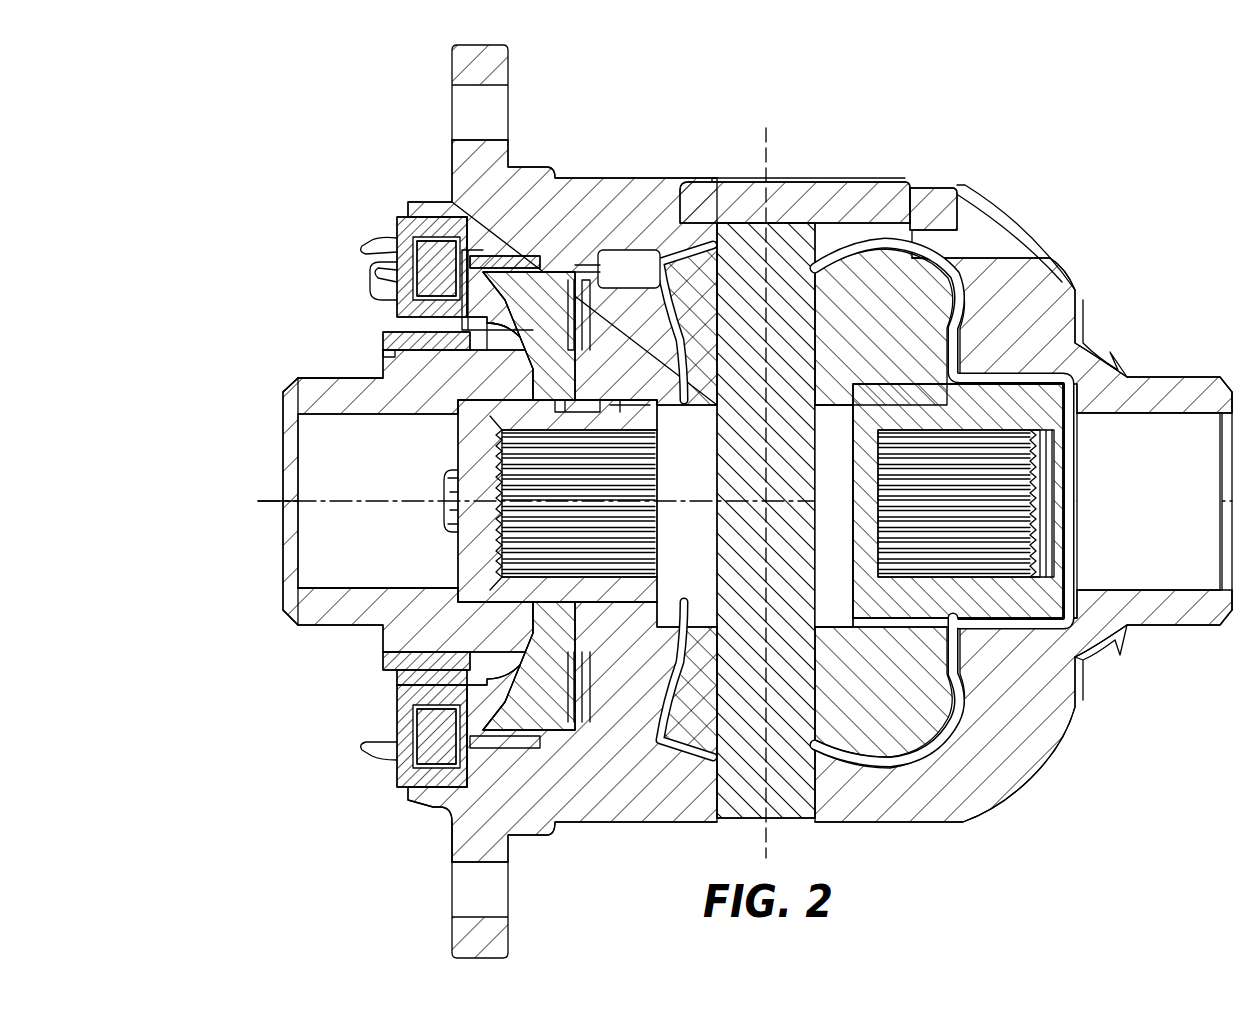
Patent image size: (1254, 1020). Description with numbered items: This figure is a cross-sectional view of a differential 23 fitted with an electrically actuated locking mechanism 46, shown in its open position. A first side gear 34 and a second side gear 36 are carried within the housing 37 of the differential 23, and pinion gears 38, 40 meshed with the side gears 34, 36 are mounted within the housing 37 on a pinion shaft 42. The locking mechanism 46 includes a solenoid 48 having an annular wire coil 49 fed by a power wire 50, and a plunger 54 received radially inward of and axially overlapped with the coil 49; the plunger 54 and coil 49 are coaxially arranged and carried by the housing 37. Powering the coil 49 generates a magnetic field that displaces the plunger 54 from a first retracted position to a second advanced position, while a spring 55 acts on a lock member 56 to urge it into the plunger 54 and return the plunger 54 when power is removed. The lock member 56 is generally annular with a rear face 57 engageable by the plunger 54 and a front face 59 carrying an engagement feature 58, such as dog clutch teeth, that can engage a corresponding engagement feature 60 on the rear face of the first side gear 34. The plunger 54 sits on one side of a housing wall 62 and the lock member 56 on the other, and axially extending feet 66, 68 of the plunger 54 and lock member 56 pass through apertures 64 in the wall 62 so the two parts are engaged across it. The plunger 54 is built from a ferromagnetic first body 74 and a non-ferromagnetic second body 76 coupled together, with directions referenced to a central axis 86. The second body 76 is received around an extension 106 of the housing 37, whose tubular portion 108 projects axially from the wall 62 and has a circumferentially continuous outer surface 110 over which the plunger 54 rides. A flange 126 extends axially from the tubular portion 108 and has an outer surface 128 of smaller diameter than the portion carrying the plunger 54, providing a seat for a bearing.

The differential 23 is at (973, 165).
The first side gear 34 is at (490, 418).
The second side gear 36 is at (1040, 418).
The housing 37 is at (665, 195).
The pinion gear 38 is at (855, 275).
The pinion gear 40 is at (850, 720).
The pinion shaft 42 is at (795, 235).
The locking mechanism 46 is at (385, 236).
The solenoid 48 is at (409, 761).
The annular wire coil 49 is at (393, 270).
The power wire 50 is at (372, 240).
The plunger 54 is at (378, 333).
The spring 55 is at (586, 370).
The lock member 56 is at (543, 285).
The rear face 57 is at (432, 270).
The engagement feature 58 is at (590, 295).
The front face 59 is at (575, 268).
The engagement feature 60 is at (586, 297).
The housing wall 62 is at (500, 690).
The apertures 64 is at (470, 250).
The feet 66 is at (492, 344).
The feet 68 is at (506, 256).
The first body 74 is at (410, 678).
The second body 76 is at (392, 657).
The central axis 86 is at (268, 506).
The extension 106 is at (262, 607).
The tubular portion 108 is at (402, 613).
The outer surface 110 is at (403, 350).
The flange 126 is at (300, 392).
The outer surface 128 is at (325, 378).